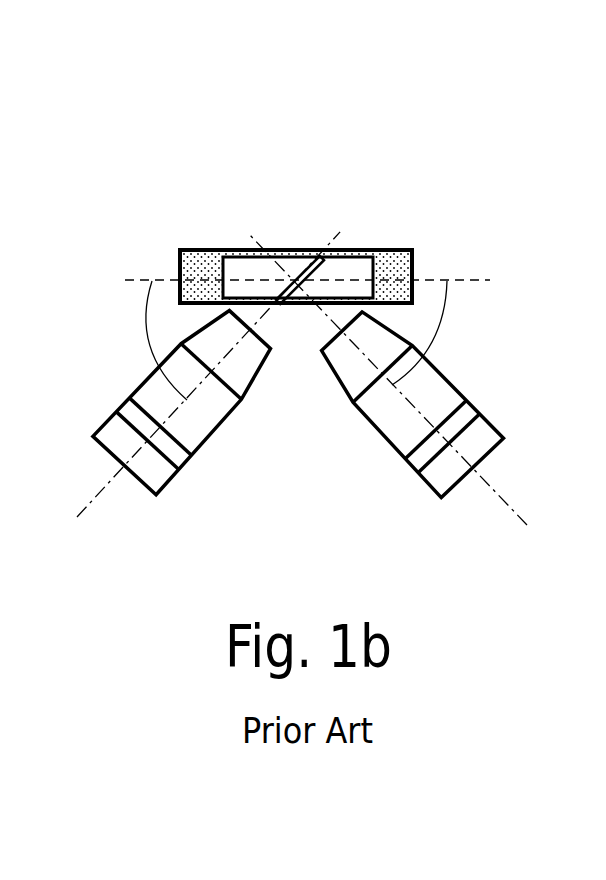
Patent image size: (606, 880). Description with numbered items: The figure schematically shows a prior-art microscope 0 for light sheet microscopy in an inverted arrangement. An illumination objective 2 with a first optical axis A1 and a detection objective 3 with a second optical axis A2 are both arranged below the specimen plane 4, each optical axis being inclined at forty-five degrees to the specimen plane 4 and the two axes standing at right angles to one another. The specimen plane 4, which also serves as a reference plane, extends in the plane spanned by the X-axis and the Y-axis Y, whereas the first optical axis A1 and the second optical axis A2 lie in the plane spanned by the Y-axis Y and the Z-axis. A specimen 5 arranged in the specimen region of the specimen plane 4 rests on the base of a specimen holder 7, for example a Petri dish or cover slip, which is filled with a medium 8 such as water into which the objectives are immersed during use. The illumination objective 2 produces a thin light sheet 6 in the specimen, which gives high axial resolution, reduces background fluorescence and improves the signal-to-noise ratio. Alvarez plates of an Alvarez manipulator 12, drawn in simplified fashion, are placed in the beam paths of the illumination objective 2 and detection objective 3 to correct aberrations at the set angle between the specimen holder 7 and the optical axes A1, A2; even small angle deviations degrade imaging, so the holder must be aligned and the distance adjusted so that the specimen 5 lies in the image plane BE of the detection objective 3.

The microscope 0 is at (154, 67).
The illumination objective 2 is at (142, 380).
The detection objective 3 is at (433, 378).
The specimen plane 4 is at (473, 282).
The specimen 5 is at (349, 273).
The light sheet 6 is at (322, 259).
The specimen holder 7 is at (181, 272).
The medium 8 is at (190, 258).
The Alvarez manipulator 12 is at (122, 417).
The first optical axis A1 is at (117, 472).
The second optical axis A2 is at (482, 472).
The image plane BE is at (300, 257).
The Y-axis Y is at (7, 628).